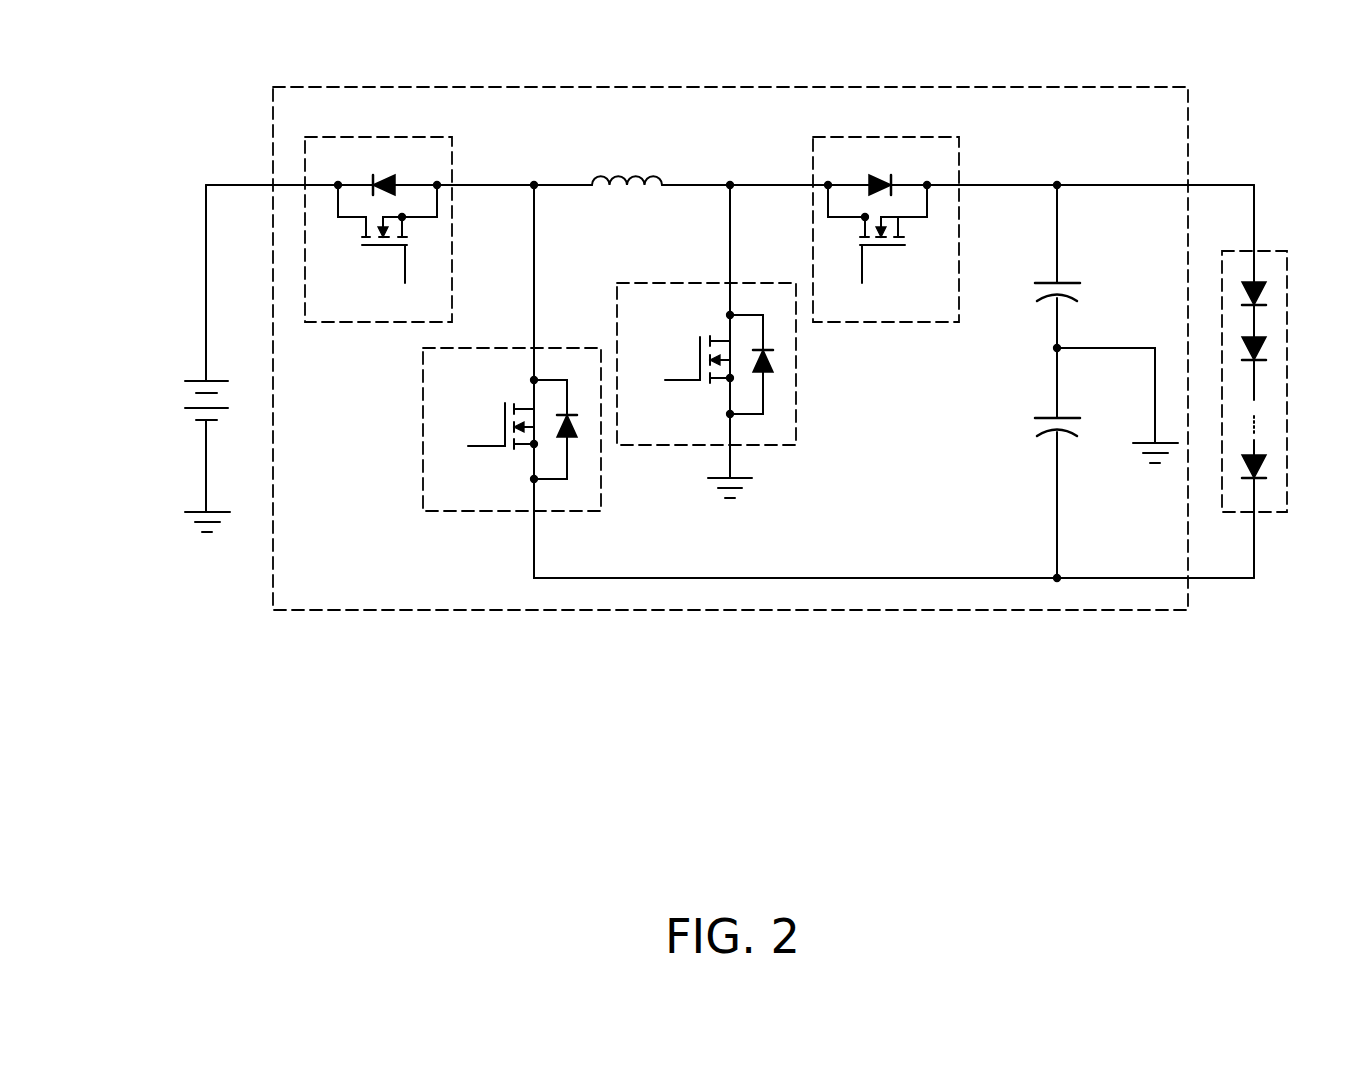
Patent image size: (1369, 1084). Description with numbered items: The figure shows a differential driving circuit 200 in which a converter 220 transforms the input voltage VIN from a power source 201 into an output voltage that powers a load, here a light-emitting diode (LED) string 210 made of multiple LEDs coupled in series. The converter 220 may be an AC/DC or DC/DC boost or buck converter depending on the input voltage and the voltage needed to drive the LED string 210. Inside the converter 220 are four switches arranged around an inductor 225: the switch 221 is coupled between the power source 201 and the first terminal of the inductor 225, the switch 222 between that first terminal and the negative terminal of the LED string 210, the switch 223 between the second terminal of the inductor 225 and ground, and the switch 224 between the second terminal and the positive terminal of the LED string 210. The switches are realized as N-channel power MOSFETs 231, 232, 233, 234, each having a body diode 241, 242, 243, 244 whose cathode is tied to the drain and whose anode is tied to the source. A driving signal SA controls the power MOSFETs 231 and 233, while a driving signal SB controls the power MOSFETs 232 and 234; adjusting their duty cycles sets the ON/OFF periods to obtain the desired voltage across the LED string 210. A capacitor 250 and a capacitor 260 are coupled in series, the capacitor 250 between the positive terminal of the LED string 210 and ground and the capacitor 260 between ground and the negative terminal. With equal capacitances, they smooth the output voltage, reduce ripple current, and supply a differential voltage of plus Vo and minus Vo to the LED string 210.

The differential driving circuit 200 is at (180, 150).
The power source 201 is at (193, 381).
The light-emitting diode (LED) string 210 is at (1289, 313).
The converter 220 is at (675, 610).
The switch 221 is at (382, 136).
The switch 222 is at (567, 512).
The switch 223 is at (760, 445).
The switch 224 is at (870, 136).
The inductor 225 is at (637, 176).
The power MOSFET 231 is at (372, 248).
The power MOSFET 232 is at (503, 420).
The power MOSFET 233 is at (698, 352).
The power MOSFET 234 is at (887, 251).
The body diode 241 is at (382, 179).
The body diode 242 is at (573, 416).
The body diode 243 is at (768, 351).
The body diode 244 is at (880, 179).
The capacitor 250 is at (1070, 284).
The capacitor 260 is at (1074, 419).